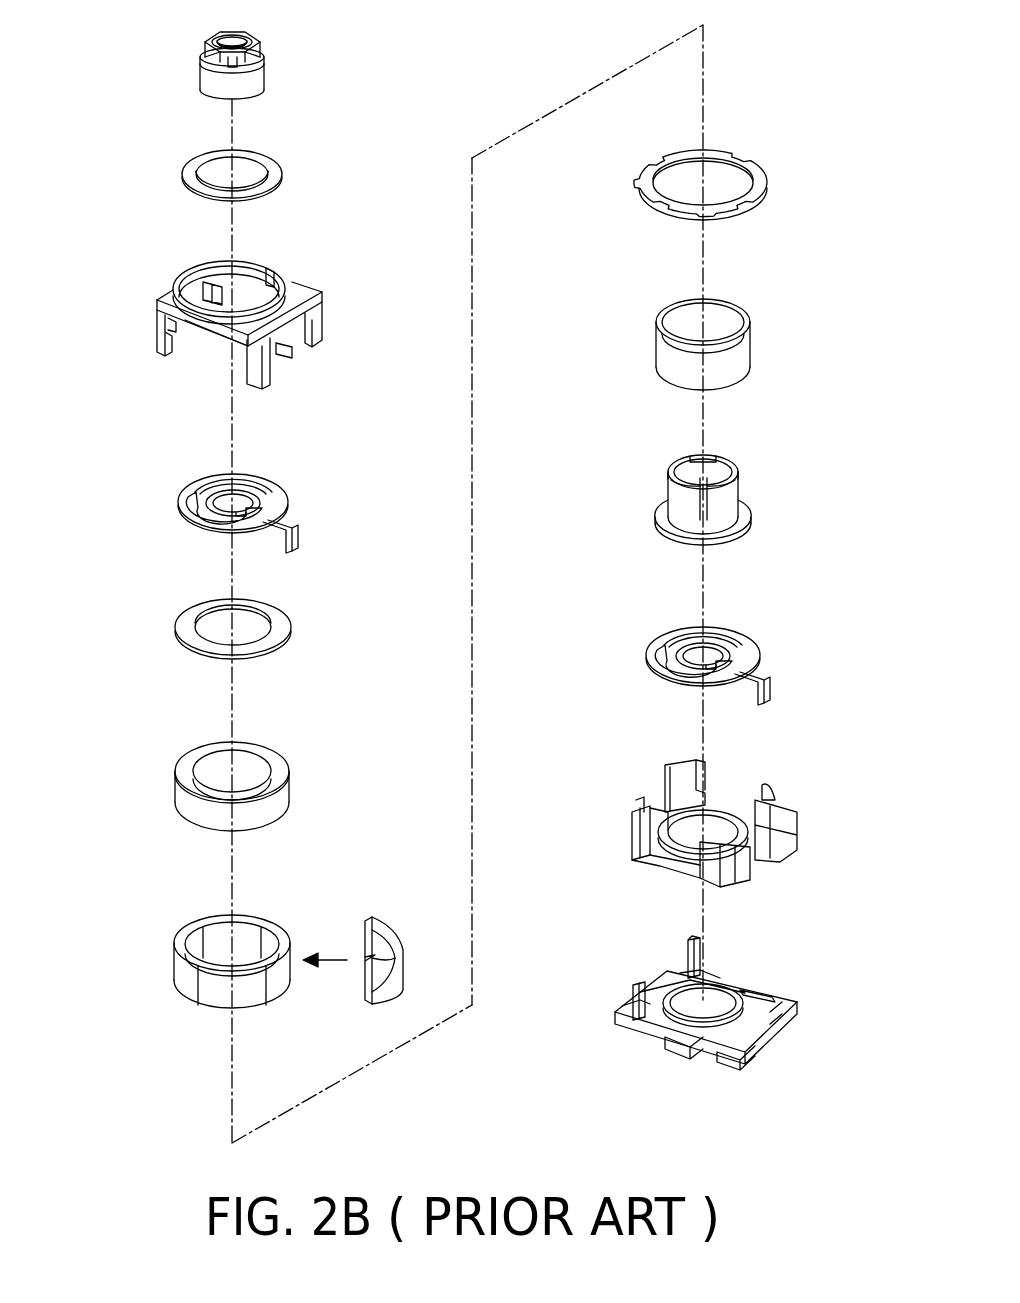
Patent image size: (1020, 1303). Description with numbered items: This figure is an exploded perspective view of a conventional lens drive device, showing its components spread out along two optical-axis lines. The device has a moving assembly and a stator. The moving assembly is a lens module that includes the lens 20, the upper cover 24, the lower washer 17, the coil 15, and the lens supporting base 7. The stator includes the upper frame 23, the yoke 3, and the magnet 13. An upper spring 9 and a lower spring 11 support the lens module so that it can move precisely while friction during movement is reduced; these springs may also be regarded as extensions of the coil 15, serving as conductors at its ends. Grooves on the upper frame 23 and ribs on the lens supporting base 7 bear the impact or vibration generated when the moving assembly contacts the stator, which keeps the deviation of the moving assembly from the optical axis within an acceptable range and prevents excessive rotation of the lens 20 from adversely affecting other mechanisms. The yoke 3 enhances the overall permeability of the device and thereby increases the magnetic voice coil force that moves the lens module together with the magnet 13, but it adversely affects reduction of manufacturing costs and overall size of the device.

The lens 20 is at (200, 76).
The upper cover 24 is at (188, 170).
The upper frame 23 is at (165, 298).
The upper spring 9 is at (178, 498).
The yoke 3 is at (185, 768).
The magnet 13 is at (180, 944).
The lower washer 17 is at (748, 162).
The coil 15 is at (748, 318).
The lens supporting base 7 is at (730, 500).
The lower spring 11 is at (758, 654).